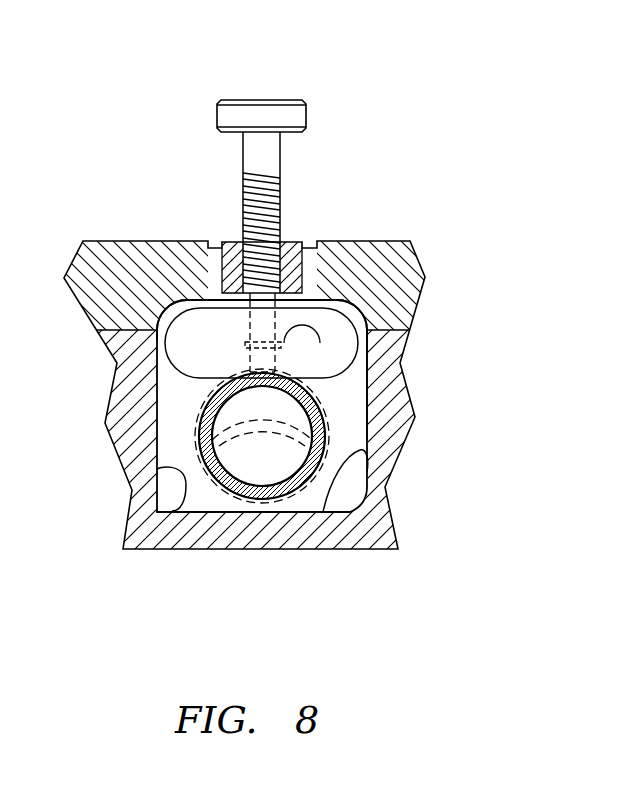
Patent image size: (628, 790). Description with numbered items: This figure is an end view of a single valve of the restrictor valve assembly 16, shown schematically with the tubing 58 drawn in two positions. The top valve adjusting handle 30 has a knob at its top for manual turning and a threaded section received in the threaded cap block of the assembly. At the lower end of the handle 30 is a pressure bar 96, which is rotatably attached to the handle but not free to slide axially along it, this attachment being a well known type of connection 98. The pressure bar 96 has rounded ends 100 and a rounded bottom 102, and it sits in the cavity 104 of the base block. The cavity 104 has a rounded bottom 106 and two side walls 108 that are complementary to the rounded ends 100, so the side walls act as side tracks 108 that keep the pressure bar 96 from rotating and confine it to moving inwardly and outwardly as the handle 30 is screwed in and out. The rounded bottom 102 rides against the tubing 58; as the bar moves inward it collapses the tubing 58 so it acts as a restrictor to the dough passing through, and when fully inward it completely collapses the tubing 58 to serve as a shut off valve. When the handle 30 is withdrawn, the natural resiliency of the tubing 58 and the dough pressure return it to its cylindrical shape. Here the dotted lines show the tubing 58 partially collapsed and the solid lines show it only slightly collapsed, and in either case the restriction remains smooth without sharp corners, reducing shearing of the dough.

The restrictor valve assembly 16 is at (130, 241).
The top valve adjusting handle 30 is at (264, 101).
The tube 58 is at (263, 497).
The pressure bar 96 is at (224, 360).
The connection 98 is at (311, 345).
The rounded ends 100 is at (360, 348).
The rounded bottom 102 is at (235, 378).
The cavity 104 is at (365, 404).
The rounded bottom 106 is at (352, 447).
The side walls 108 is at (182, 505).